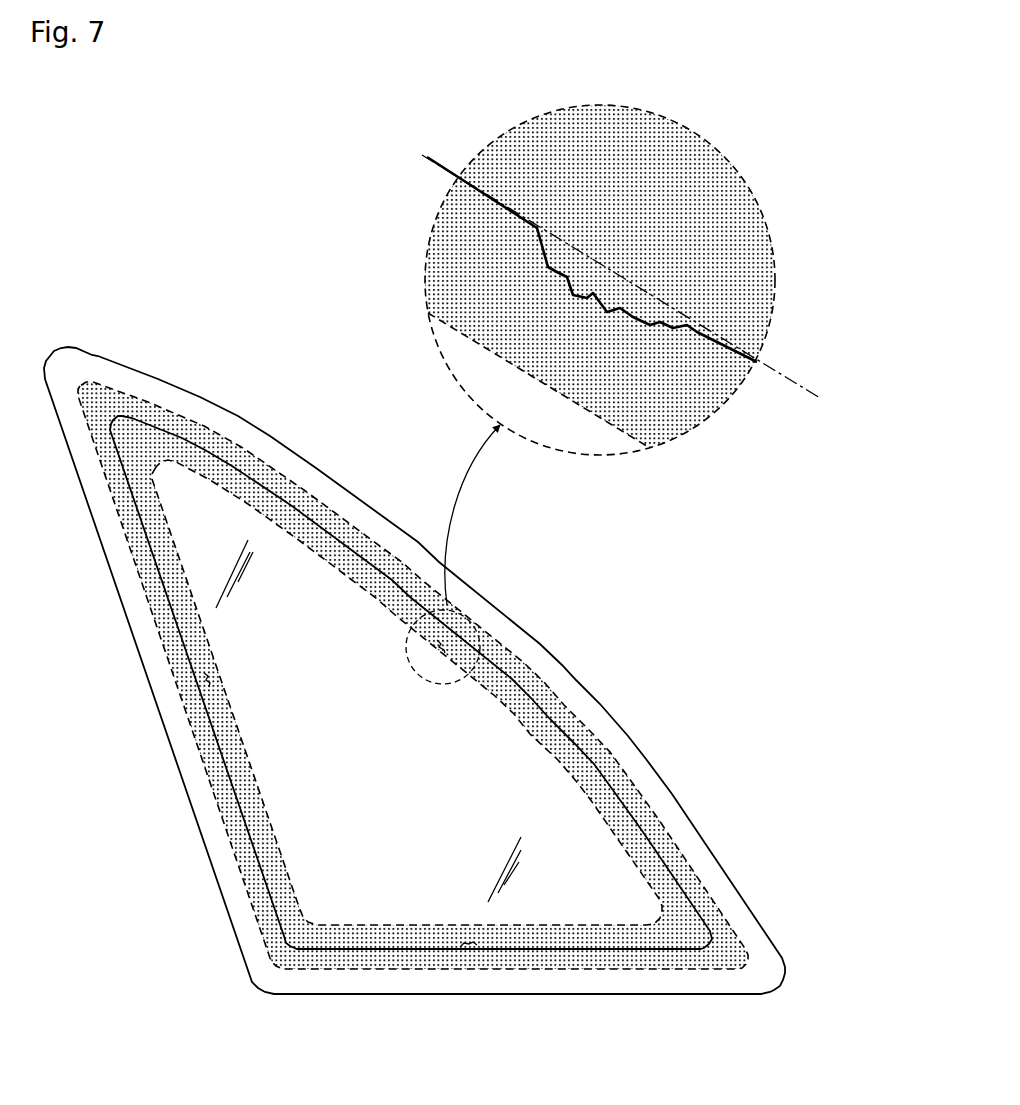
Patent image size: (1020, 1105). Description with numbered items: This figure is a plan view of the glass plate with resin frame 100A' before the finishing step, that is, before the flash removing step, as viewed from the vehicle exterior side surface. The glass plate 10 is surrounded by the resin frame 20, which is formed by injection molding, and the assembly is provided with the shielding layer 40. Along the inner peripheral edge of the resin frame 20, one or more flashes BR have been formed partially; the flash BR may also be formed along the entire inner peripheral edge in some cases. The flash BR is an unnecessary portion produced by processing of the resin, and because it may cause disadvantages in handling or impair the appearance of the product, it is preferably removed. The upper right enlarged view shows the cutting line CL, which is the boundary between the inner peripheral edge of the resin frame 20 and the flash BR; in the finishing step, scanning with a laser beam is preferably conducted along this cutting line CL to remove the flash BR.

The glass plate 10 is at (382, 900).
The resin frame 20 is at (477, 982).
The shielding layer 40 is at (684, 848).
The flash BR is at (535, 277).
The cutting line CL is at (627, 276).
The glass plate with resin frame before the finishing step 100A' is at (438, 580).